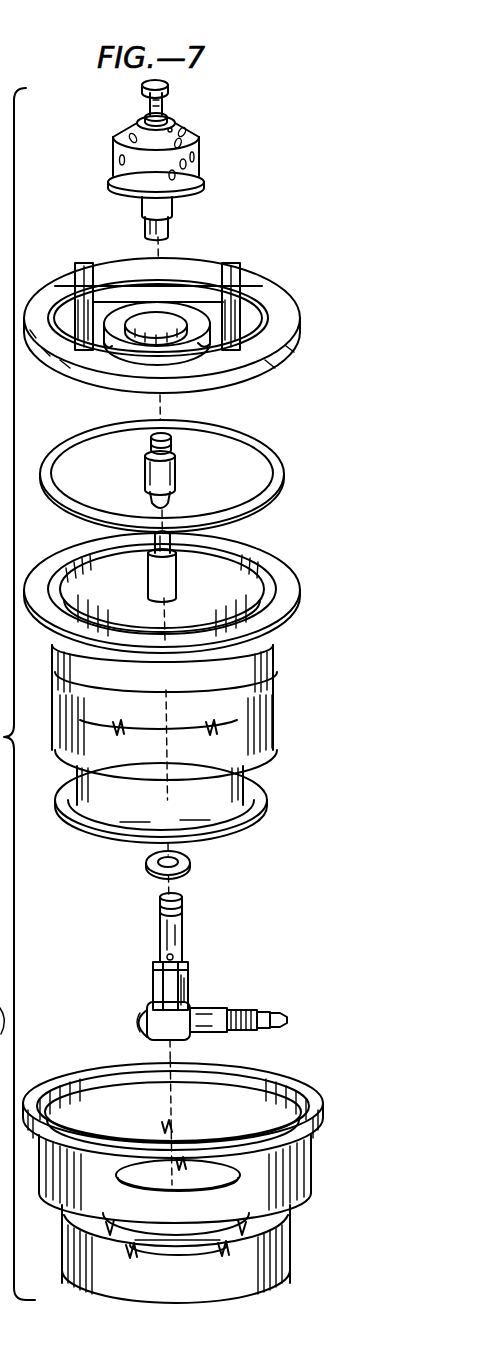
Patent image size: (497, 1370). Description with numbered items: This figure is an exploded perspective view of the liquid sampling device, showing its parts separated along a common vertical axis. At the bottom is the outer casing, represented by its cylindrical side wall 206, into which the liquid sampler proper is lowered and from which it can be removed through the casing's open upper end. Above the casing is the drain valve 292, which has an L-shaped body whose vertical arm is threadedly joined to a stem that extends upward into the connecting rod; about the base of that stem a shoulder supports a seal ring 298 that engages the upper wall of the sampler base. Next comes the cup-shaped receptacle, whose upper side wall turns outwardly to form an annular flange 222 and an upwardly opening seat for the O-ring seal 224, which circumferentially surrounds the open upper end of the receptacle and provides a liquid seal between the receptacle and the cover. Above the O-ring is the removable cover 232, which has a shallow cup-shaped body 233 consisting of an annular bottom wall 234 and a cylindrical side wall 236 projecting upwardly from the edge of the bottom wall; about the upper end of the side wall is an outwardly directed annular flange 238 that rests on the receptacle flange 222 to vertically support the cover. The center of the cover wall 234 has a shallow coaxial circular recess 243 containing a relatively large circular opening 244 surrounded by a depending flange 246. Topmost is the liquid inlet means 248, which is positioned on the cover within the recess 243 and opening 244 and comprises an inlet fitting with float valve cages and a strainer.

The cylindrical side wall 206 is at (281, 1225).
The annular flange 222 is at (268, 560).
The O-ring seal 224 is at (276, 452).
The cover 232 is at (278, 276).
The cup-shaped body 233 is at (108, 347).
The annular bottom wall 234 is at (204, 345).
The cylindrical side wall 236 is at (97, 268).
The annular flange 238 is at (281, 320).
The circular recess 243 is at (177, 282).
The circular opening 244 is at (178, 317).
The depending flange 246 is at (142, 314).
The liquid inlet means 248 is at (190, 113).
The drain valve 292 is at (143, 1003).
The seal ring 298 is at (147, 863).